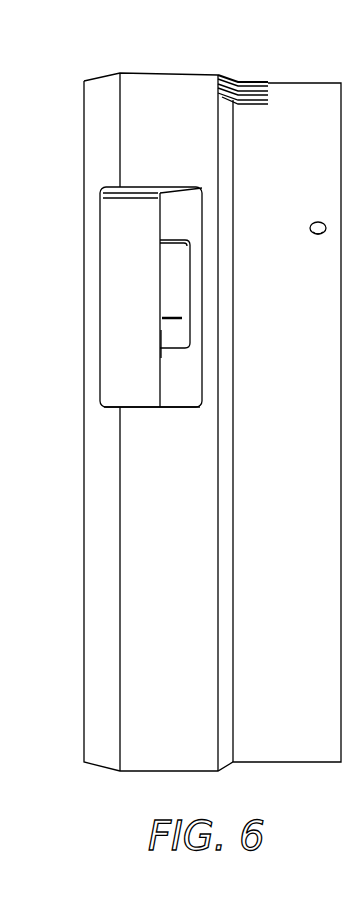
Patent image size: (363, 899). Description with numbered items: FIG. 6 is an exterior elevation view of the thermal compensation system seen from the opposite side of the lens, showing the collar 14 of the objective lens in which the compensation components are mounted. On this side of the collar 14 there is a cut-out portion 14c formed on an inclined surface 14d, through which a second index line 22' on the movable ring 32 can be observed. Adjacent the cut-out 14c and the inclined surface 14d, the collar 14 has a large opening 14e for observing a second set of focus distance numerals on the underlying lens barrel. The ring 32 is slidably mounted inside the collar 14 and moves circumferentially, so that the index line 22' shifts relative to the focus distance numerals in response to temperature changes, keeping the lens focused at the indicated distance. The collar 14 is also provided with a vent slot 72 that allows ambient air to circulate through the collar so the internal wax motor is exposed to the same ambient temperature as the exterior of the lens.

The collar 14 is at (270, 762).
The vent slot 72 is at (258, 83).
The large opening 14e is at (100, 242).
The movable ring 32 is at (170, 276).
The second index line 22' is at (107, 317).
The cut-out portion 14c is at (163, 344).
The inclined surface 14d is at (180, 395).